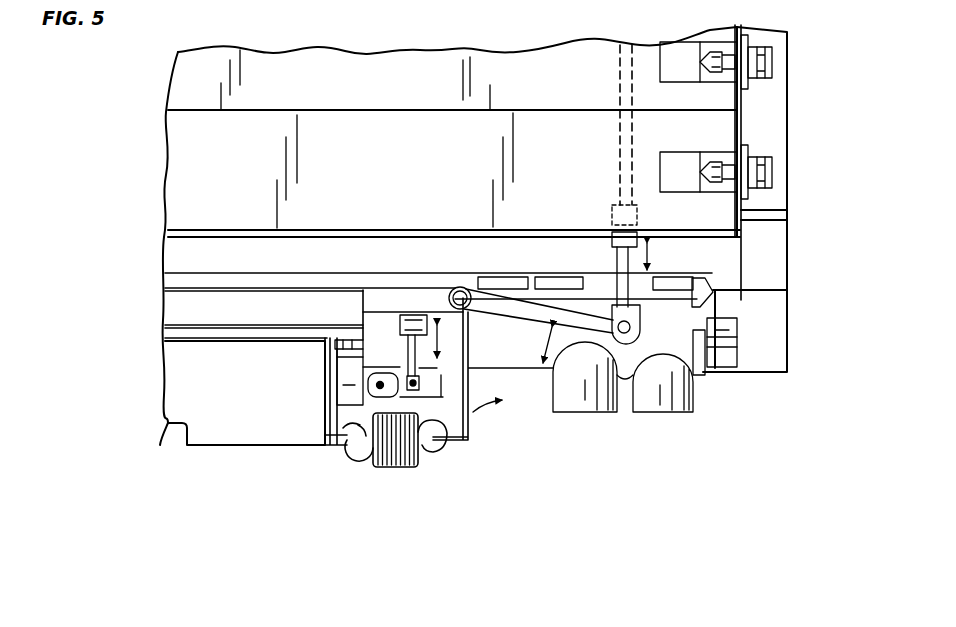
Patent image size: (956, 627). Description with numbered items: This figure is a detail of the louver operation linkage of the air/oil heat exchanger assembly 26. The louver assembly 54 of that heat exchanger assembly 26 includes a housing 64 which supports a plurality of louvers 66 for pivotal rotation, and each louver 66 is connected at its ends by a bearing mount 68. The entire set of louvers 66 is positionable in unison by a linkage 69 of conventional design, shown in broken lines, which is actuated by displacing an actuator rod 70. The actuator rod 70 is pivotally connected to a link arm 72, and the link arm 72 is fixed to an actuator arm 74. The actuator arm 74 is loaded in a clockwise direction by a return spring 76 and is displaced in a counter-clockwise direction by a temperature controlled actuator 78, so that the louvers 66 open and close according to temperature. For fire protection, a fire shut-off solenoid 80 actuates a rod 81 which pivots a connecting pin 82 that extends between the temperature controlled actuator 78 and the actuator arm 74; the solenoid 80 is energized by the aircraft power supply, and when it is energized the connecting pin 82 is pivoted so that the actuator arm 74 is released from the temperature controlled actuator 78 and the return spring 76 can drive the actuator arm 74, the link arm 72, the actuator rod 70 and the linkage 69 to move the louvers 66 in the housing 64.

The air/oil heat exchanger assembly 26 is at (793, 149).
The louver assembly 54 is at (750, 120).
The housing 64 is at (313, 230).
The louvers 66 is at (352, 91).
The bearing mount 68 is at (772, 62).
The linkage 69 is at (615, 182).
The actuator rod 70 is at (618, 268).
The link arm 72 is at (537, 322).
The actuator arm 74 is at (463, 393).
The return spring 76 is at (400, 468).
The temperature controlled actuator 78 is at (231, 440).
The fire shut-off solenoid 80 is at (412, 318).
The rod 81 is at (407, 373).
The connecting pin 82 is at (403, 372).